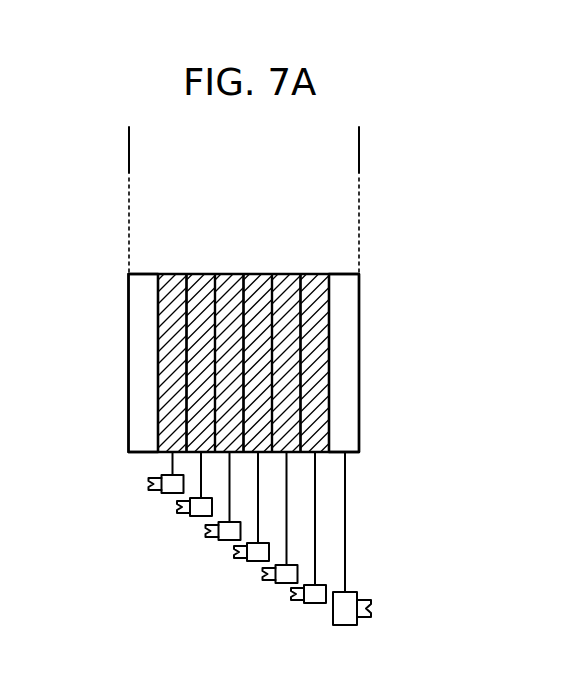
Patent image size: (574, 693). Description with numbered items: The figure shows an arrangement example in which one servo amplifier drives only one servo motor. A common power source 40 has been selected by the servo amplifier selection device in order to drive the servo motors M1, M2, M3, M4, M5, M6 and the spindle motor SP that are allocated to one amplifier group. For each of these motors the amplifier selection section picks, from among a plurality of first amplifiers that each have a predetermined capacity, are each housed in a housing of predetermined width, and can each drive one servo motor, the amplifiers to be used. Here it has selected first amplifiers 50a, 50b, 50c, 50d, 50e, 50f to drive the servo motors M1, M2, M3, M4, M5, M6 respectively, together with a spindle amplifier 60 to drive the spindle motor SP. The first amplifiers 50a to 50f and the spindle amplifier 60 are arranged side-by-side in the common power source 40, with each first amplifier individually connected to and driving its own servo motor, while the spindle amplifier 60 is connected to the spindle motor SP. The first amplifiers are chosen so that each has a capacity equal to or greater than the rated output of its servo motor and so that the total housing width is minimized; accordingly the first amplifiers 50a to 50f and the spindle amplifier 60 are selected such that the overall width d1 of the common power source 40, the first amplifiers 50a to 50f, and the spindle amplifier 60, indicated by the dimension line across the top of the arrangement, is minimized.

The common power source 40 is at (138, 305).
The spindle amplifier 60 is at (348, 305).
The first amplifier 50a is at (169, 273).
The first amplifier 50b is at (195, 273).
The first amplifier 50c is at (227, 273).
The first amplifier 50d is at (250, 273).
The first amplifier 50e is at (280, 273).
The first amplifier 50f is at (310, 273).
The servo motor M1 is at (152, 495).
The servo motor M2 is at (178, 517).
The servo motor M3 is at (207, 540).
The servo motor M4 is at (236, 561).
The servo motor M5 is at (262, 583).
The servo motor M6 is at (292, 604).
The spindle motor SP is at (333, 625).
The total value of the widths d1 is at (129, 152).